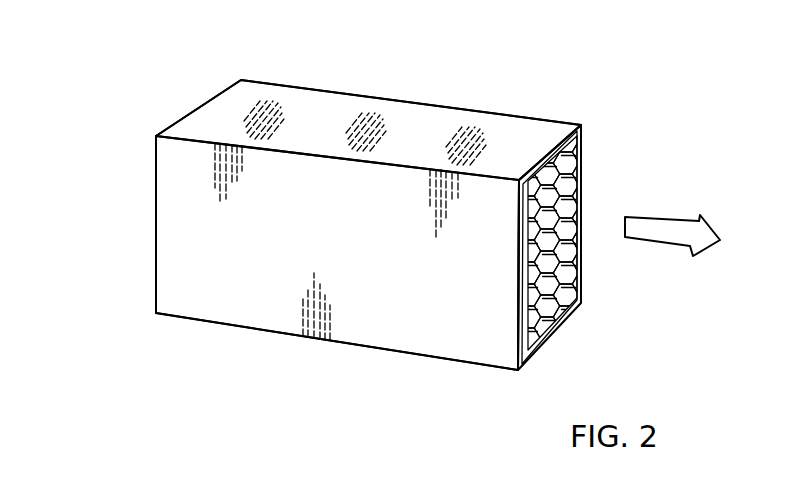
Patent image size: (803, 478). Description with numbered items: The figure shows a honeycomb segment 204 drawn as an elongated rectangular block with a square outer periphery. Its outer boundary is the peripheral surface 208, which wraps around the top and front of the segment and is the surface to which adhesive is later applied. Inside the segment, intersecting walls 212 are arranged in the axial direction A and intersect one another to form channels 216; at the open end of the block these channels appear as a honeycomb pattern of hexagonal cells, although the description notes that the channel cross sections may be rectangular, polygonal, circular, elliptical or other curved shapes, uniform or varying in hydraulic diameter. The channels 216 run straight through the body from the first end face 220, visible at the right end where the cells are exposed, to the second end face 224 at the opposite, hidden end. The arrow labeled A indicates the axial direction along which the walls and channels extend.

The honeycomb segment 204 is at (539, 73).
The peripheral surface 208 is at (310, 105).
The intersecting walls 212 is at (574, 195).
The channels 216 is at (572, 297).
The first end face 220 is at (584, 165).
The second end face 224 is at (150, 238).
The axial direction A is at (691, 235).